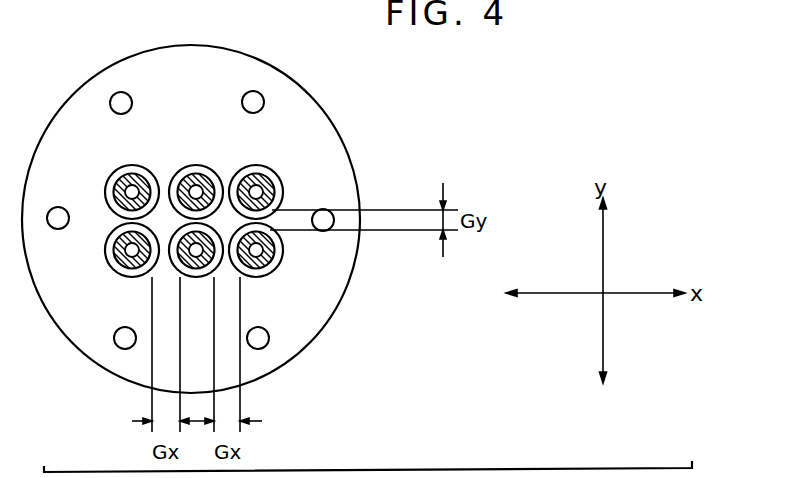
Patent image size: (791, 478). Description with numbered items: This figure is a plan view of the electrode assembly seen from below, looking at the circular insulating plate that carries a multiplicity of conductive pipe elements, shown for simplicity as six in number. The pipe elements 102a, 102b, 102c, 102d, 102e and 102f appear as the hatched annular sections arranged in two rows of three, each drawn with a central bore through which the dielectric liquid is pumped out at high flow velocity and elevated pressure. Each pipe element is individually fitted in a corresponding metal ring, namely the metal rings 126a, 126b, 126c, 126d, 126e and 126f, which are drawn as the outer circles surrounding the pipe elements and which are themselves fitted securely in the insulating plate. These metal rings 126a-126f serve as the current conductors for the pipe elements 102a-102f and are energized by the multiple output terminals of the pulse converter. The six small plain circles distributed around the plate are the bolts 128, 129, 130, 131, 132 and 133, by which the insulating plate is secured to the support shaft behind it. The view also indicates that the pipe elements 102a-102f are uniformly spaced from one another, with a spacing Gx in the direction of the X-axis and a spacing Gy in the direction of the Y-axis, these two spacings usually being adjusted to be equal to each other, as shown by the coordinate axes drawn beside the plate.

The conductive pipe element 102a is at (122, 186).
The conductive pipe element 102b is at (192, 186).
The conductive pipe element 102c is at (262, 178).
The conductive pipe element 102d is at (122, 262).
The conductive pipe element 102e is at (168, 272).
The conductive pipe element 102f is at (268, 258).
The metal ring 126a is at (138, 157).
The metal ring 126b is at (223, 158).
The metal ring 126c is at (285, 176).
The metal ring 126d is at (110, 248).
The metal ring 126e is at (220, 271).
The metal ring 126f is at (284, 250).
The bolt 128 is at (334, 220).
The bolt 129 is at (60, 208).
The bolt 130 is at (123, 101).
The bolt 131 is at (257, 99).
The bolt 132 is at (116, 338).
The bolt 133 is at (270, 337).